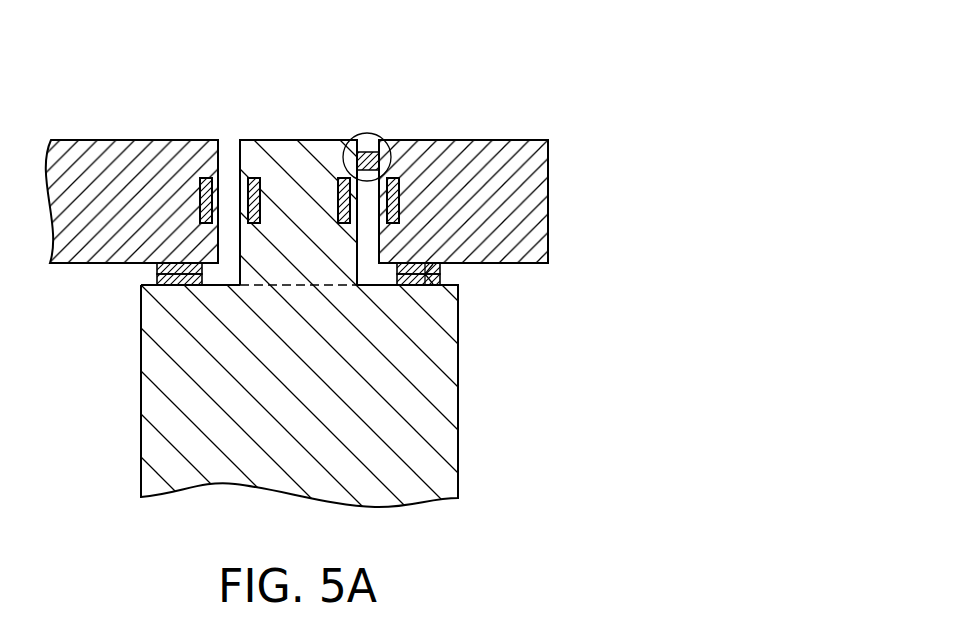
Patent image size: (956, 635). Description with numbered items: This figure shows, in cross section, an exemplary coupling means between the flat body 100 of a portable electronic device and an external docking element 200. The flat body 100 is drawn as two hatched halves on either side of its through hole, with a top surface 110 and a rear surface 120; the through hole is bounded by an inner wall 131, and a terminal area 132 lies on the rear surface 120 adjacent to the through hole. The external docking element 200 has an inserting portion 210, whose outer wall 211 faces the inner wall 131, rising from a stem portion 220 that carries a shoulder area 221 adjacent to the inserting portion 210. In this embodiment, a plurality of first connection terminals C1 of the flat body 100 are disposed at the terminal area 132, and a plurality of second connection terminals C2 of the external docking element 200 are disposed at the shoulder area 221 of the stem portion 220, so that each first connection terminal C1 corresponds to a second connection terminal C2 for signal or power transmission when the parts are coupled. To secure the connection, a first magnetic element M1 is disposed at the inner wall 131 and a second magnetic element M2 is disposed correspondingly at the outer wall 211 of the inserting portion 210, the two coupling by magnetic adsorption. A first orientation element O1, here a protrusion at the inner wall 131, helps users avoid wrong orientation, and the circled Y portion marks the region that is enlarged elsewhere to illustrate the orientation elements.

The flat body 100 is at (532, 172).
The top surface of first member 110 is at (518, 133).
The rear surface 120 is at (530, 270).
The inner wall 131 is at (257, 178).
The terminal area 132 is at (433, 286).
The external docking element 200 is at (433, 380).
The inserting portion 210 is at (312, 140).
The outer wall 211 is at (237, 141).
The stem portion 220 is at (458, 443).
The shoulder area 221 is at (389, 279).
The first orientation element O1 is at (378, 153).
The Y portion Y is at (372, 133).
The first magnetic element M1 is at (199, 198).
The second magnetic element M2 is at (226, 197).
The first connection terminals C1 is at (157, 266).
The second connection terminals C2 is at (173, 285).